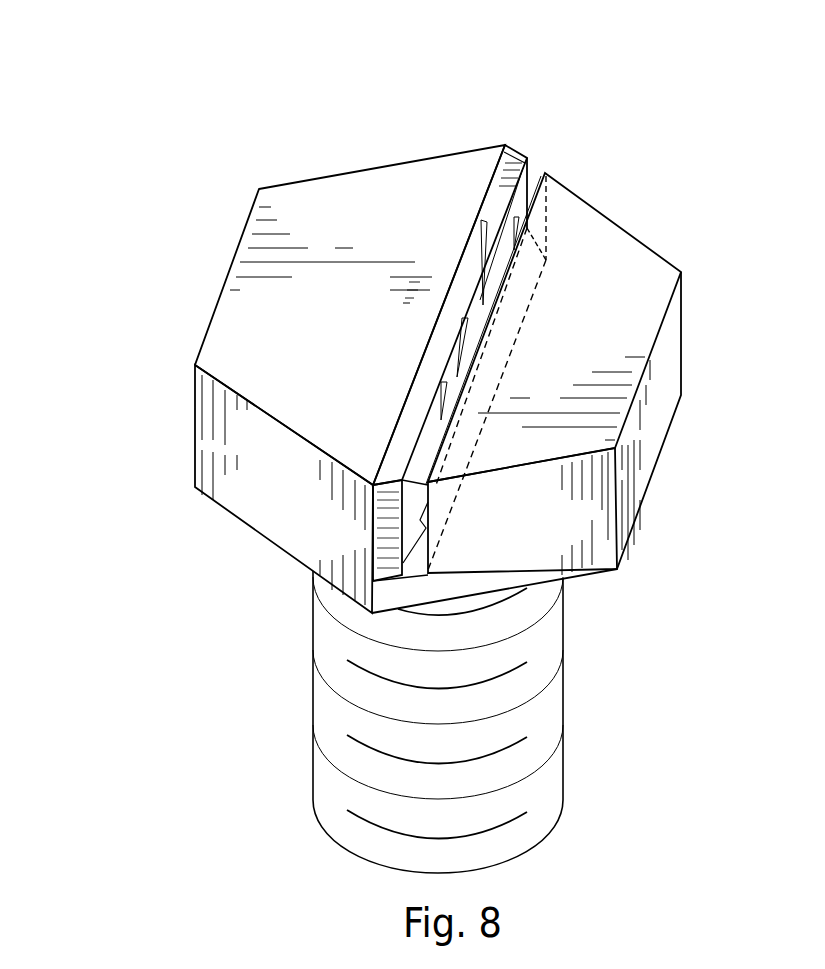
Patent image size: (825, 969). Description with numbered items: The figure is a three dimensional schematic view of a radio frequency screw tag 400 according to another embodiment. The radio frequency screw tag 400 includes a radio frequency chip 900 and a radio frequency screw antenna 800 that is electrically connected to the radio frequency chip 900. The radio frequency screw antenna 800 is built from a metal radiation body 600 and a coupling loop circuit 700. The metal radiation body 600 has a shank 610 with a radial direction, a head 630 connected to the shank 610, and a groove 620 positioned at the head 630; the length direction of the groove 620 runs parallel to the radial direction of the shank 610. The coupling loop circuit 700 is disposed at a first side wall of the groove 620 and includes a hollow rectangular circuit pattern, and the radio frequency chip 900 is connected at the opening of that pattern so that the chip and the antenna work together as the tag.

The radio frequency screw tag 400 is at (98, 65).
The metal radiation body 600 is at (754, 181).
The shank 610 is at (552, 634).
The groove 620 is at (537, 177).
The head 630 is at (588, 225).
The coupling loop circuit 700 is at (505, 170).
The radio frequency screw antenna 800 is at (772, 80).
The radio frequency chip 900 is at (470, 332).